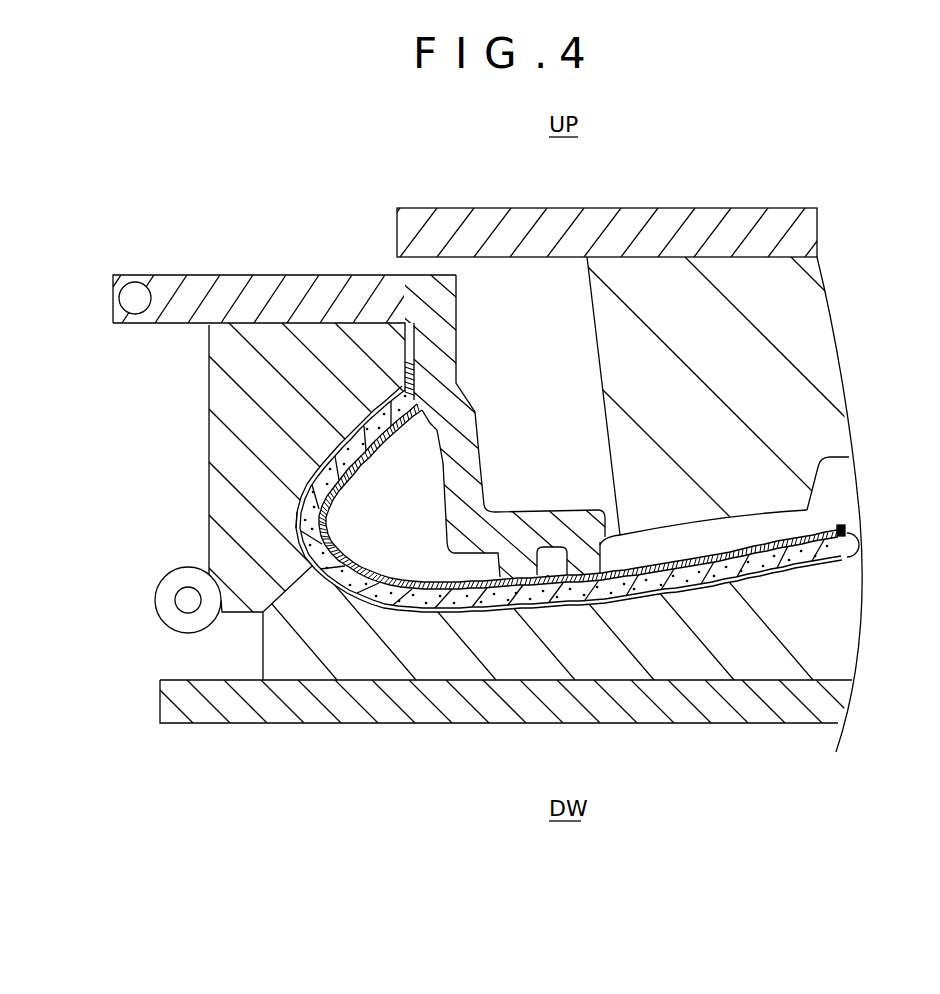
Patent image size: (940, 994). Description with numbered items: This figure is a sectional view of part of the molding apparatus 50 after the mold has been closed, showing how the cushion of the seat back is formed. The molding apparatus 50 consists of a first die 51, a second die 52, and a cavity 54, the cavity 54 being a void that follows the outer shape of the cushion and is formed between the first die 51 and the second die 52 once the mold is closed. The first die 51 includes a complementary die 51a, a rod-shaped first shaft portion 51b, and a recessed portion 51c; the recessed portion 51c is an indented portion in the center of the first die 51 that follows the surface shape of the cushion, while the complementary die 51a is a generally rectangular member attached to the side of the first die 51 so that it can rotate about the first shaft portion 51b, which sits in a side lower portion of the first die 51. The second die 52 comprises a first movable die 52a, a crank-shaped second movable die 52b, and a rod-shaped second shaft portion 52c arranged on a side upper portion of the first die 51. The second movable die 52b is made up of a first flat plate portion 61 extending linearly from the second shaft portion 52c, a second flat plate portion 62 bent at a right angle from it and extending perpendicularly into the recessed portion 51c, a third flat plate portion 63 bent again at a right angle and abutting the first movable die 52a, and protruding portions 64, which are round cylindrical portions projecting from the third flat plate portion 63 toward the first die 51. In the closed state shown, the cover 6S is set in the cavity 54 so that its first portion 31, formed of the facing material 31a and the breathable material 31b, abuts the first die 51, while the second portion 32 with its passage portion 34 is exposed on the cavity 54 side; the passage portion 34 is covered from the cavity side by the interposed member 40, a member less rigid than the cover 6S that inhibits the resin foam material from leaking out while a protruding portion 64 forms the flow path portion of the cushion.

The first portion 31 is at (579, 600).
The facing material 31a is at (762, 580).
The breathable material 31b is at (727, 580).
The second portion 32 is at (667, 585).
The passage portion 34 is at (522, 608).
The interposed member 40 is at (588, 572).
The molding apparatus 50 is at (737, 191).
The first die 51 is at (312, 705).
The complementary die 51a is at (252, 593).
The first shaft portion 51b is at (186, 603).
The recessed portion 51c is at (300, 520).
The second die 52 is at (465, 276).
The first movable die 52a is at (452, 206).
The second movable die 52b is at (227, 271).
The second shaft portion 52c is at (133, 297).
The cavity 54 is at (756, 524).
The first flat plate portion 61 is at (326, 282).
The second flat plate portion 62 is at (447, 372).
The third flat plate portion 63 is at (565, 518).
The protruding portion 64 is at (553, 560).
The cover 6S is at (814, 529).